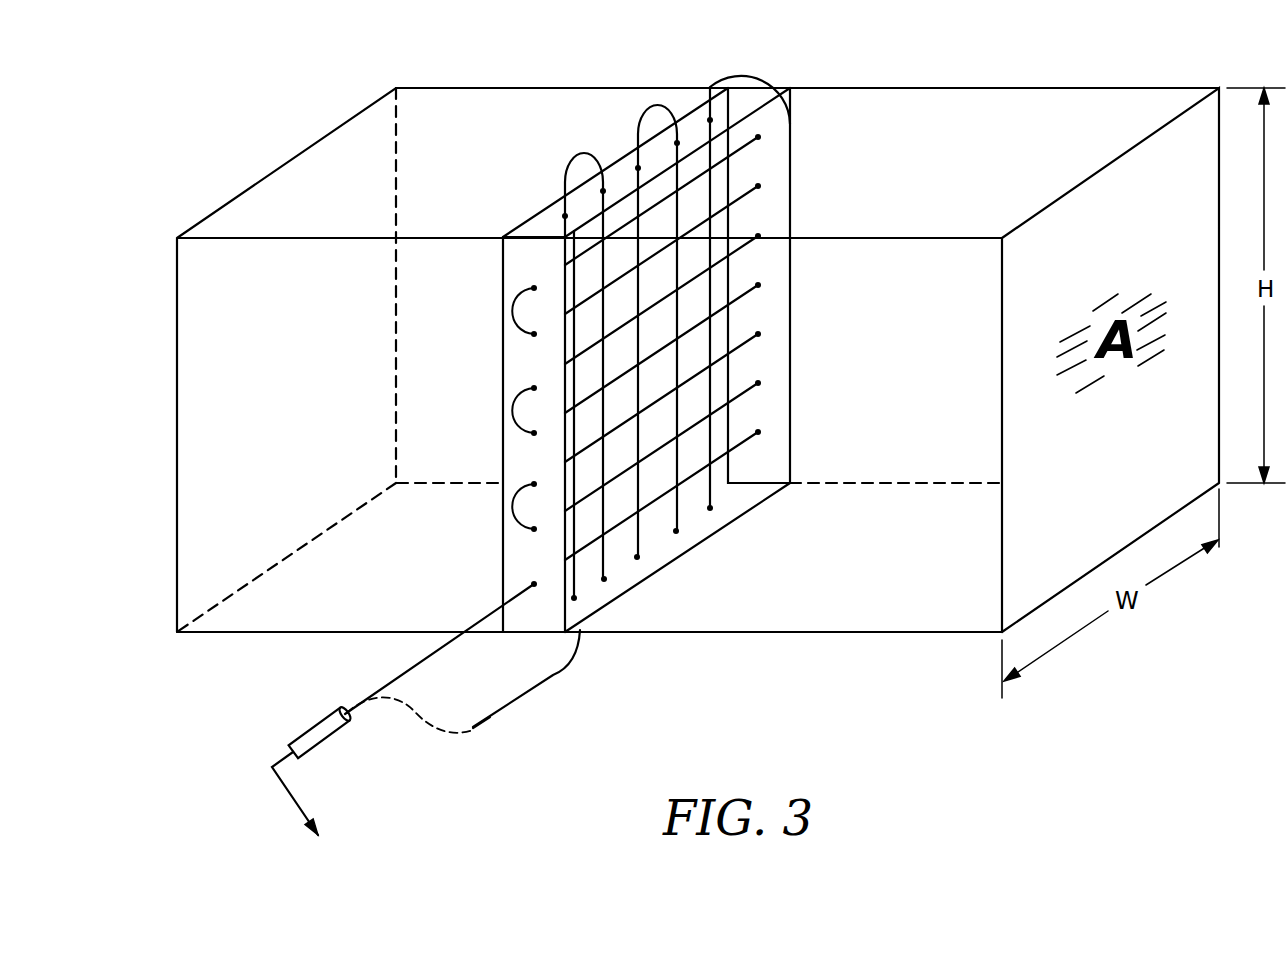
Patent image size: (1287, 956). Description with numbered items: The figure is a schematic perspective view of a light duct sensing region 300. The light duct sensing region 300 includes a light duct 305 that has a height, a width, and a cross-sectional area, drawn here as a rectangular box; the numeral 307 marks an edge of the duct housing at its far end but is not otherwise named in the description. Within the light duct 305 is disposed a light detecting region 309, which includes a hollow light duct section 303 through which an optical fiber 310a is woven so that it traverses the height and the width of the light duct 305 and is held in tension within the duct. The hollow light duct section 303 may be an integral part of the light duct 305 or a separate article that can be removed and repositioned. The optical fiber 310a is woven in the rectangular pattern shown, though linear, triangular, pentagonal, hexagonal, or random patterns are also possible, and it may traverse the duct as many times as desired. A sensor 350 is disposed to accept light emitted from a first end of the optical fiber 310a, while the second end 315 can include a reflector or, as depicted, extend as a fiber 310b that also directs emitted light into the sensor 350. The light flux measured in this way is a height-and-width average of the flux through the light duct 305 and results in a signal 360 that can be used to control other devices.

The light duct sensing region 300 is at (222, 103).
The hollow light duct section 303 is at (546, 215).
The light duct 305 is at (310, 634).
The duct outlet wall 307 is at (1159, 98).
The light detecting region 309 is at (716, 373).
The optical fiber 310a is at (485, 615).
The fiber 310b is at (427, 721).
The second end 315 is at (478, 733).
The sensor 350 is at (327, 740).
The signal 360 is at (290, 800).